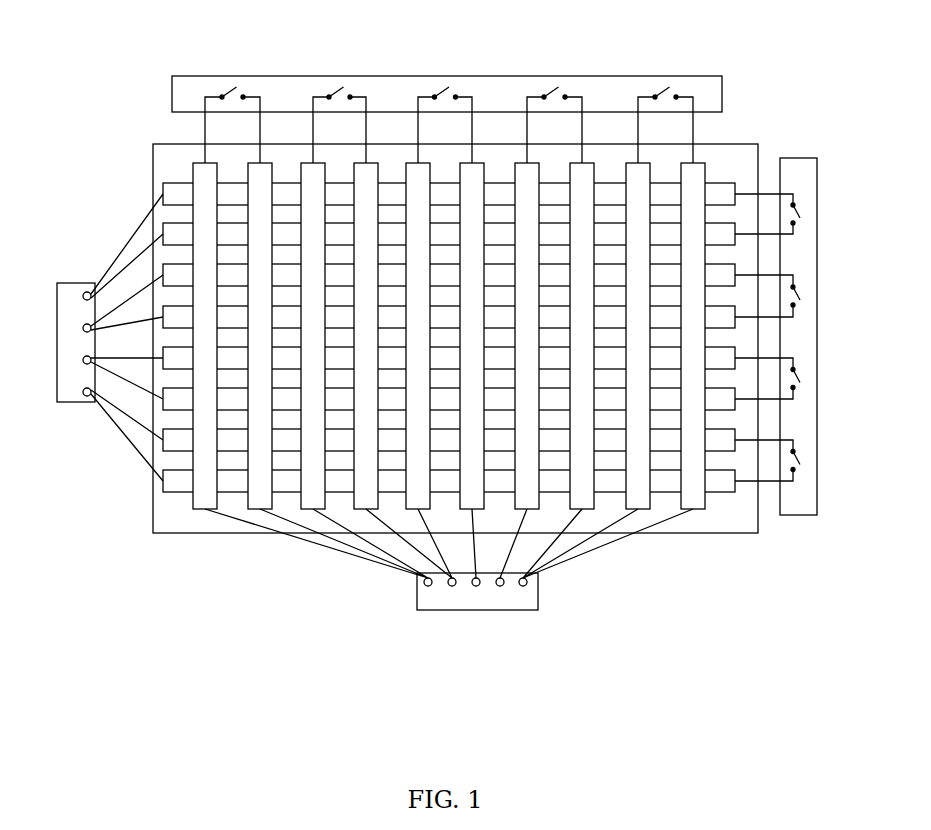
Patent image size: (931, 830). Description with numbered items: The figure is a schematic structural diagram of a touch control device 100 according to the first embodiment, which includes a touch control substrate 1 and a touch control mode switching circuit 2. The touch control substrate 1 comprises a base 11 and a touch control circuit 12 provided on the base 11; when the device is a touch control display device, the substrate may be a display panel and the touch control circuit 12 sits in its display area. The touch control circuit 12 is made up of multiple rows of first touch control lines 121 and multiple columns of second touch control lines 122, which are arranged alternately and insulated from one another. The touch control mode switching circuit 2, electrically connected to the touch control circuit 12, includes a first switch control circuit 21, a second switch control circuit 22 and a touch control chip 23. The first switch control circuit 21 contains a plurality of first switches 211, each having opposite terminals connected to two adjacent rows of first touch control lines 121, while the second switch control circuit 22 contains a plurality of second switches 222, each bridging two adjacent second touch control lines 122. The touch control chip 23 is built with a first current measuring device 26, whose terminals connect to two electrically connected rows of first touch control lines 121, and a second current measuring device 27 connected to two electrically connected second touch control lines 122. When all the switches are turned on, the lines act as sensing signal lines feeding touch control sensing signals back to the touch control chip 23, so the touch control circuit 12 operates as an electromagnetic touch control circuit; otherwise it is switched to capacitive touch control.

The touch control device 100 is at (143, 50).
The touch control substrate 1 is at (514, 313).
The base 11 is at (735, 150).
The touch control circuit 12 is at (507, 305).
The first touch control lines 121 is at (725, 193).
The second touch control lines 122 is at (698, 212).
The touch control mode switching circuit 2 is at (519, 277).
The second switch control circuit 22 is at (477, 101).
The second switch 222 is at (445, 90).
The first switch control circuit 21 is at (800, 336).
The first switch 211 is at (802, 300).
The touch control chip 23 is at (358, 402).
The first current measuring device 26 is at (84, 396).
The second current measuring device 27 is at (424, 585).